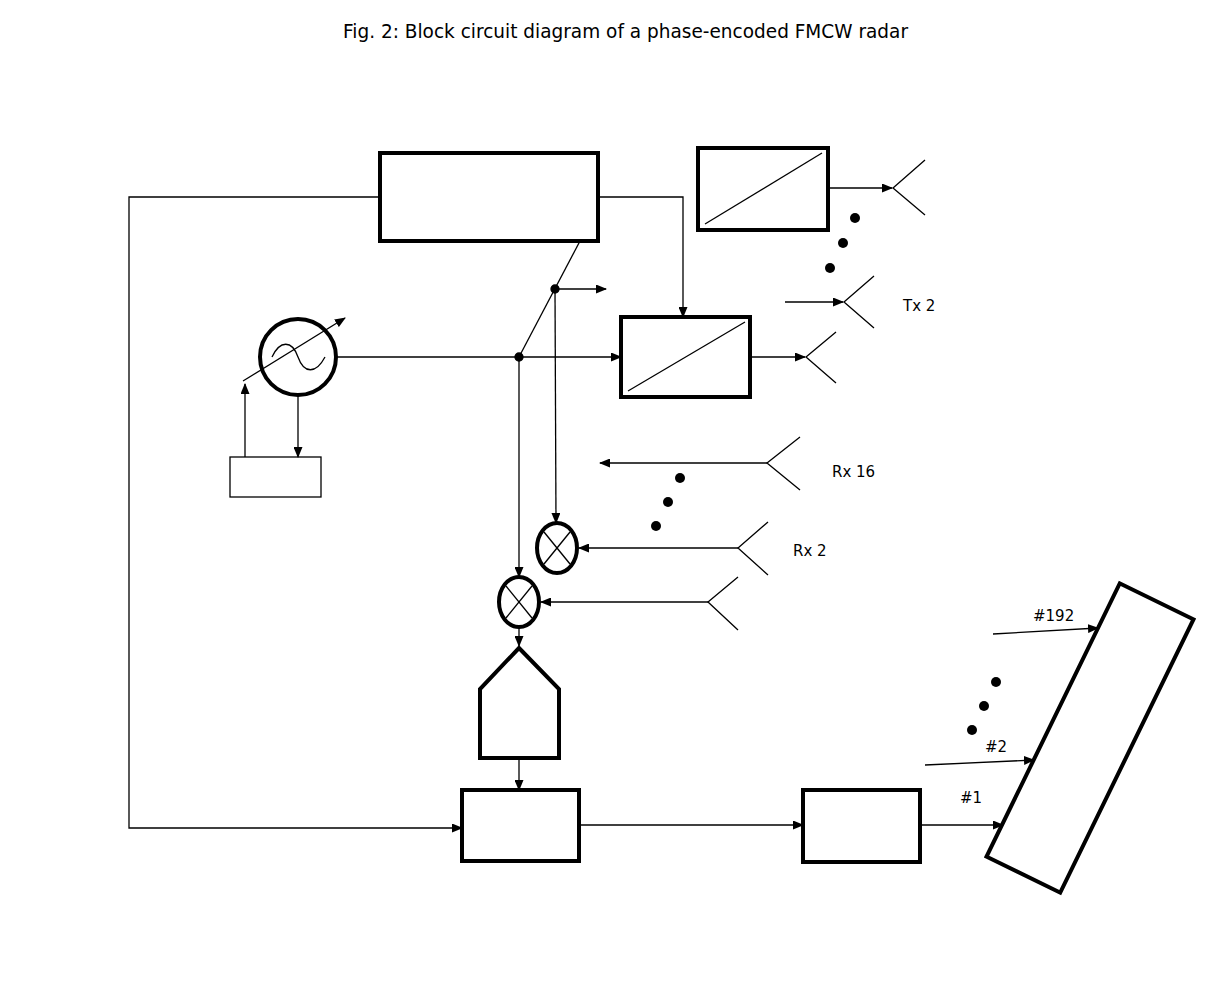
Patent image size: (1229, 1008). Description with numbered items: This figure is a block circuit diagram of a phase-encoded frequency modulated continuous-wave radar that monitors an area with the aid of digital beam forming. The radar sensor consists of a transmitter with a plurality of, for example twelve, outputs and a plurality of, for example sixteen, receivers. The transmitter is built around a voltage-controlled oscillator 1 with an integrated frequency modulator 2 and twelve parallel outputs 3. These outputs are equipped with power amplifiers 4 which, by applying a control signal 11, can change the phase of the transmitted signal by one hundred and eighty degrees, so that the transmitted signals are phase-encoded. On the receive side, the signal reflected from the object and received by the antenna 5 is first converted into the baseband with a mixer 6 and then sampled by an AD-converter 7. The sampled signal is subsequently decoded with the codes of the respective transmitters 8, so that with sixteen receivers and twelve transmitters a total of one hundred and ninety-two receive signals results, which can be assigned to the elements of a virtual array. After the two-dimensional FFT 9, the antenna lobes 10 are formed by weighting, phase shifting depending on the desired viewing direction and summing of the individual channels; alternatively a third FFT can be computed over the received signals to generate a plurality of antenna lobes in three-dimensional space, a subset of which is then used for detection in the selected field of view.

The voltage-controlled oscillator 1 is at (300, 335).
The frequency modulator 2 is at (244, 487).
The parallel outputs 3 is at (860, 186).
The power amplifiers 4 is at (752, 318).
The antenna 5 is at (660, 600).
The mixer 6 is at (504, 598).
The AD-converter 7 is at (488, 700).
The decoder 8 is at (508, 845).
The two-dimensional FFT 9 is at (884, 848).
The antenna lobes 10 is at (1157, 633).
The control signal 11 is at (525, 160).